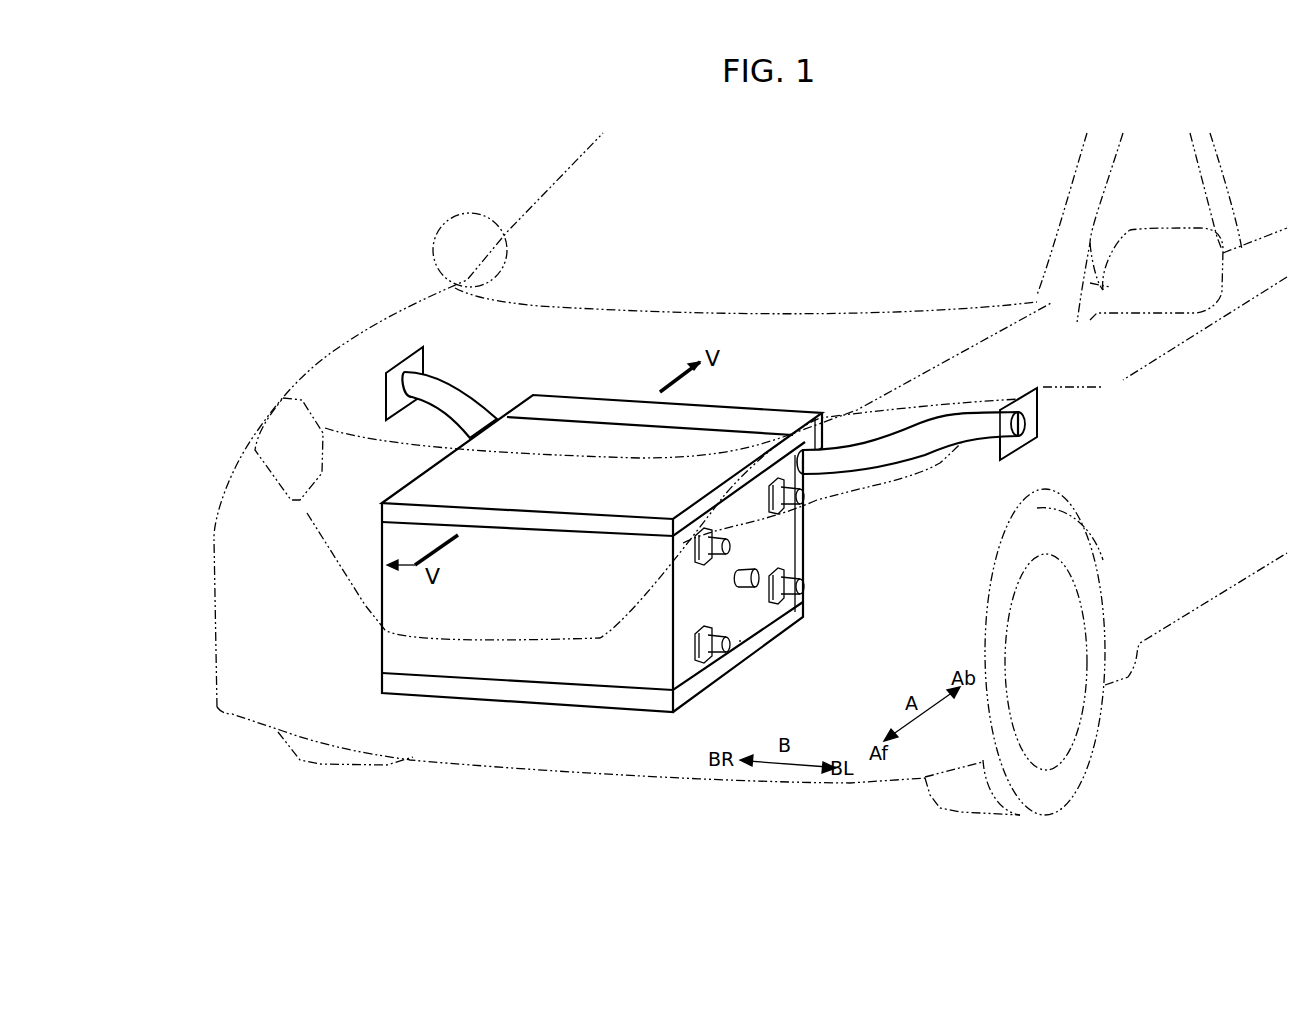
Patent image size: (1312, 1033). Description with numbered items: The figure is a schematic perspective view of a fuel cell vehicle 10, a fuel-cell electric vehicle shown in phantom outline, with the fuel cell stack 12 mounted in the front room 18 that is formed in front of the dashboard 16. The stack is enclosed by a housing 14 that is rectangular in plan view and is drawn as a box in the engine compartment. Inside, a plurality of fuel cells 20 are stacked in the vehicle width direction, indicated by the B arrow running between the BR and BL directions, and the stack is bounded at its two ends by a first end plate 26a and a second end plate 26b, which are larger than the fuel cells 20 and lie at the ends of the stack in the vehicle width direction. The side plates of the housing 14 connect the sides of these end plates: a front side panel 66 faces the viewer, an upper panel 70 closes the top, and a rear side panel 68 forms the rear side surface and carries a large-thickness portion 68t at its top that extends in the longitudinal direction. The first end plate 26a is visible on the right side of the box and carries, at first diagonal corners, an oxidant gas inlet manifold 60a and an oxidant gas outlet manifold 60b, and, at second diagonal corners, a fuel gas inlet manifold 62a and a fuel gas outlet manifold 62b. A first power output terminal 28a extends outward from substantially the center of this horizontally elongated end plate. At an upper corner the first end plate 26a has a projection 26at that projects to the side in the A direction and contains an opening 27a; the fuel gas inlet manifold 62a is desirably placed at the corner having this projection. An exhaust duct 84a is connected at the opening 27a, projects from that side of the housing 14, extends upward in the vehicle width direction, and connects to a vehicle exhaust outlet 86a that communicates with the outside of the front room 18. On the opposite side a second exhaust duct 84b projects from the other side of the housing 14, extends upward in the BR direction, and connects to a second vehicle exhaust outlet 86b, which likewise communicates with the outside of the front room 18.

The fuel cell vehicle 10 is at (860, 116).
The fuel cell stack 12 is at (600, 745).
The housing 14 is at (418, 482).
The dashboard 16 is at (720, 326).
The front room 18 is at (440, 335).
The fuel cell 20 is at (572, 684).
The first end plate 26a is at (757, 620).
The second end plate 26b is at (380, 651).
The projection 26at is at (810, 440).
The opening 27a is at (812, 478).
The first power output terminal 28a is at (750, 585).
The oxidant gas inlet manifold 60a is at (700, 540).
The oxidant gas outlet manifold 60b is at (783, 594).
The fuel gas inlet manifold 62a is at (791, 504).
The fuel gas outlet manifold 62b is at (708, 658).
The front side panel 66 is at (482, 660).
The rear side panel 68 is at (812, 585).
The large-thickness portion 68t is at (822, 428).
The upper panel 70 is at (560, 495).
The exhaust duct 84a is at (908, 452).
The exhaust duct 84b is at (465, 406).
The vehicle exhaust outlet 86a is at (1035, 435).
The vehicle exhaust outlet 86b is at (395, 398).